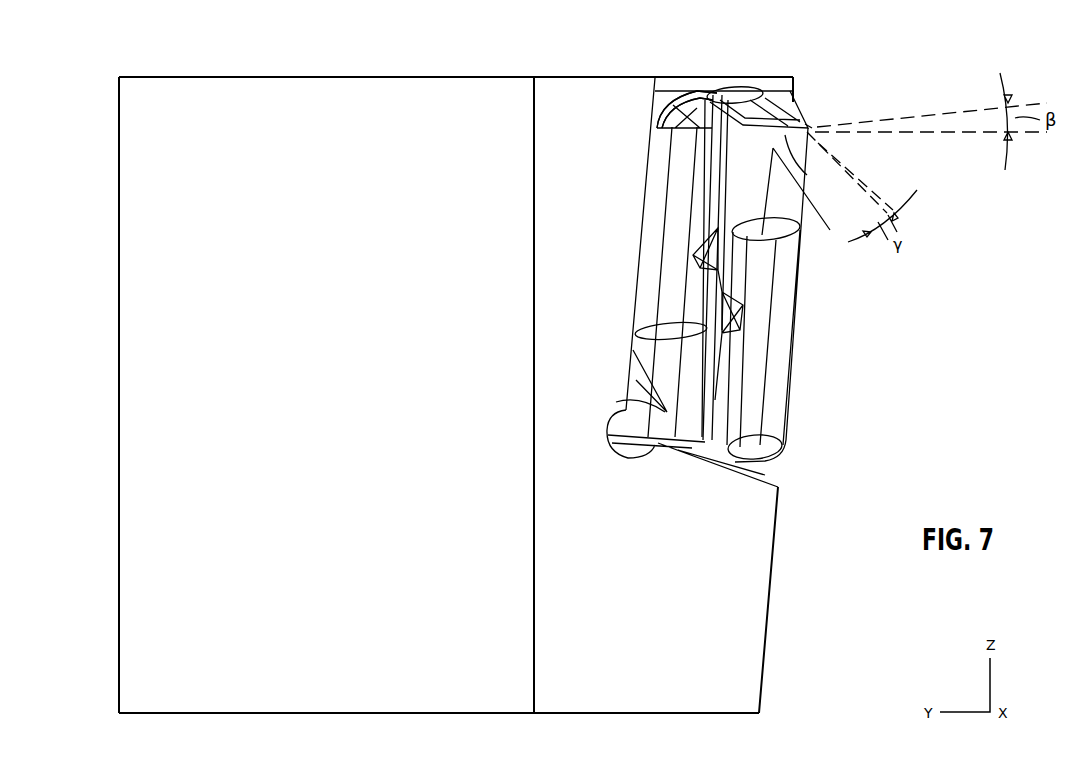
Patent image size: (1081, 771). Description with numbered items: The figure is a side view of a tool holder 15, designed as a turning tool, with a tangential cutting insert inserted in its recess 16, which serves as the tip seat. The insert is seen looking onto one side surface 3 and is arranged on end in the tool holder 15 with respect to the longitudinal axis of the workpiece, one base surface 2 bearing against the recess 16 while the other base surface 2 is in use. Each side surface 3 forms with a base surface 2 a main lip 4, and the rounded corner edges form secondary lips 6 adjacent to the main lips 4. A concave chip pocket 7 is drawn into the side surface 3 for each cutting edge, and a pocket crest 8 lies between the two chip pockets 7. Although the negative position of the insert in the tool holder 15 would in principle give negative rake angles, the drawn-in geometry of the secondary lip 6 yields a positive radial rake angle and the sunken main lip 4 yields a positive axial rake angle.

The base surface 2 is at (641, 183).
The side surface 3 is at (745, 90).
The main lip 4 is at (813, 126).
The secondary lip 6 is at (773, 148).
The chip pocket 7 is at (770, 112).
The pocket crest 8 is at (735, 92).
The tool holder 15 is at (375, 389).
The recess 16 is at (780, 484).